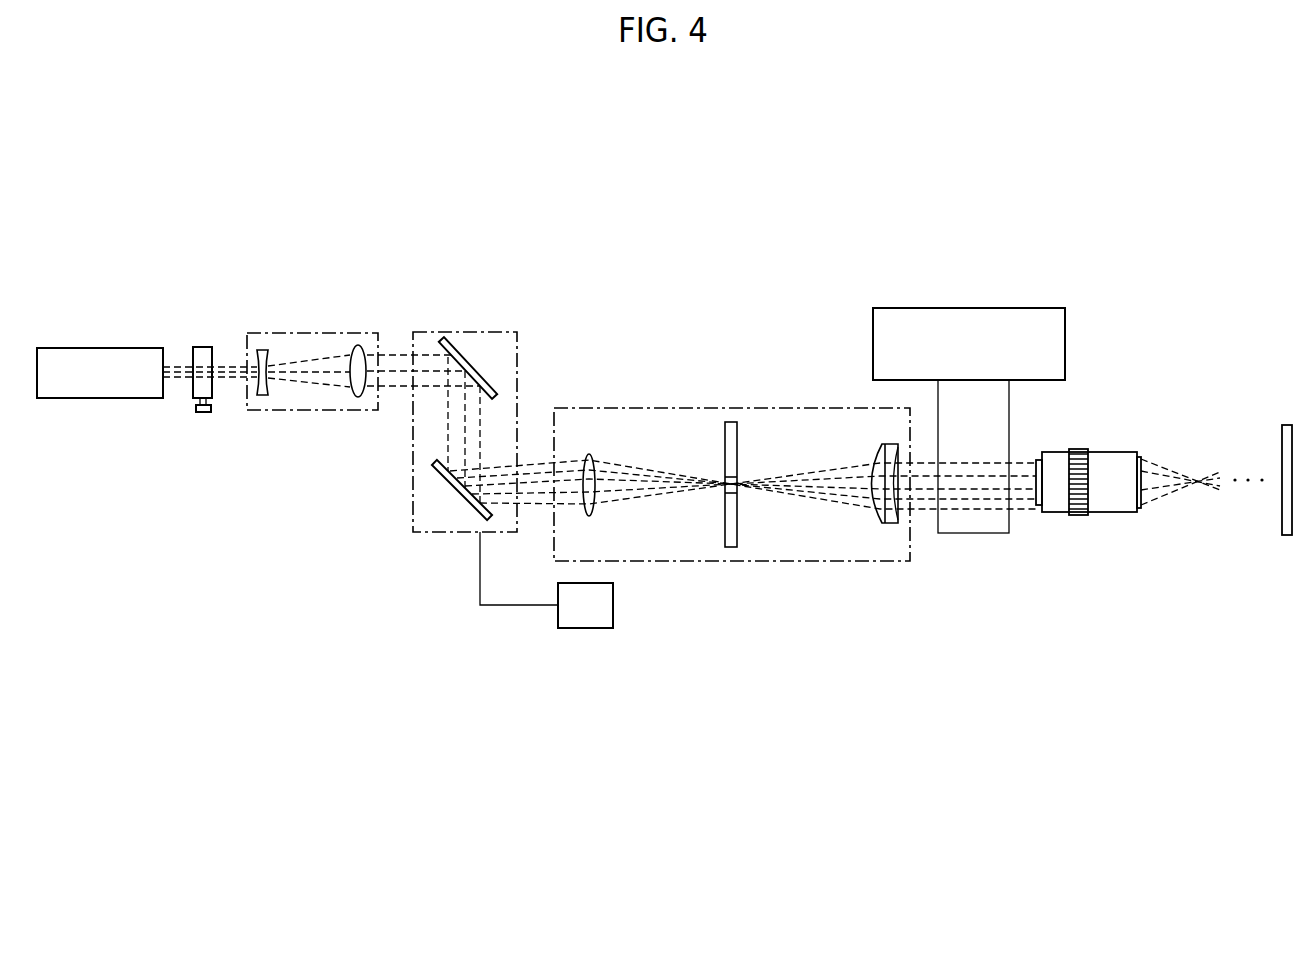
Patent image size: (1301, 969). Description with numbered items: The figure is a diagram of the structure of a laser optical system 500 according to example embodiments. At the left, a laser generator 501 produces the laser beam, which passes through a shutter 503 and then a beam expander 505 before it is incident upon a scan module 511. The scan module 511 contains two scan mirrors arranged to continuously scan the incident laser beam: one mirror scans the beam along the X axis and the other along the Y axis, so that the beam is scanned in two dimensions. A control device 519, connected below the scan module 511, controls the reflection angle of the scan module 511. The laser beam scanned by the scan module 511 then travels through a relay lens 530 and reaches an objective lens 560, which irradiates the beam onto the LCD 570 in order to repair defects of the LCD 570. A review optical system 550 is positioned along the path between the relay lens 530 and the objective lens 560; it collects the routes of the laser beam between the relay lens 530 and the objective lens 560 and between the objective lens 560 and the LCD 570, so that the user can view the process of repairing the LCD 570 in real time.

The laser optical system 500 is at (667, 697).
The laser generator 501 is at (103, 347).
The shutter 503 is at (205, 347).
The beam expander 505 is at (313, 333).
The scan module 511 is at (465, 332).
The control device 519 is at (614, 605).
The relay lens 530 is at (763, 408).
The review optical system 550 is at (975, 308).
The objective lens 560 is at (1107, 508).
The LCD 570 is at (1287, 537).